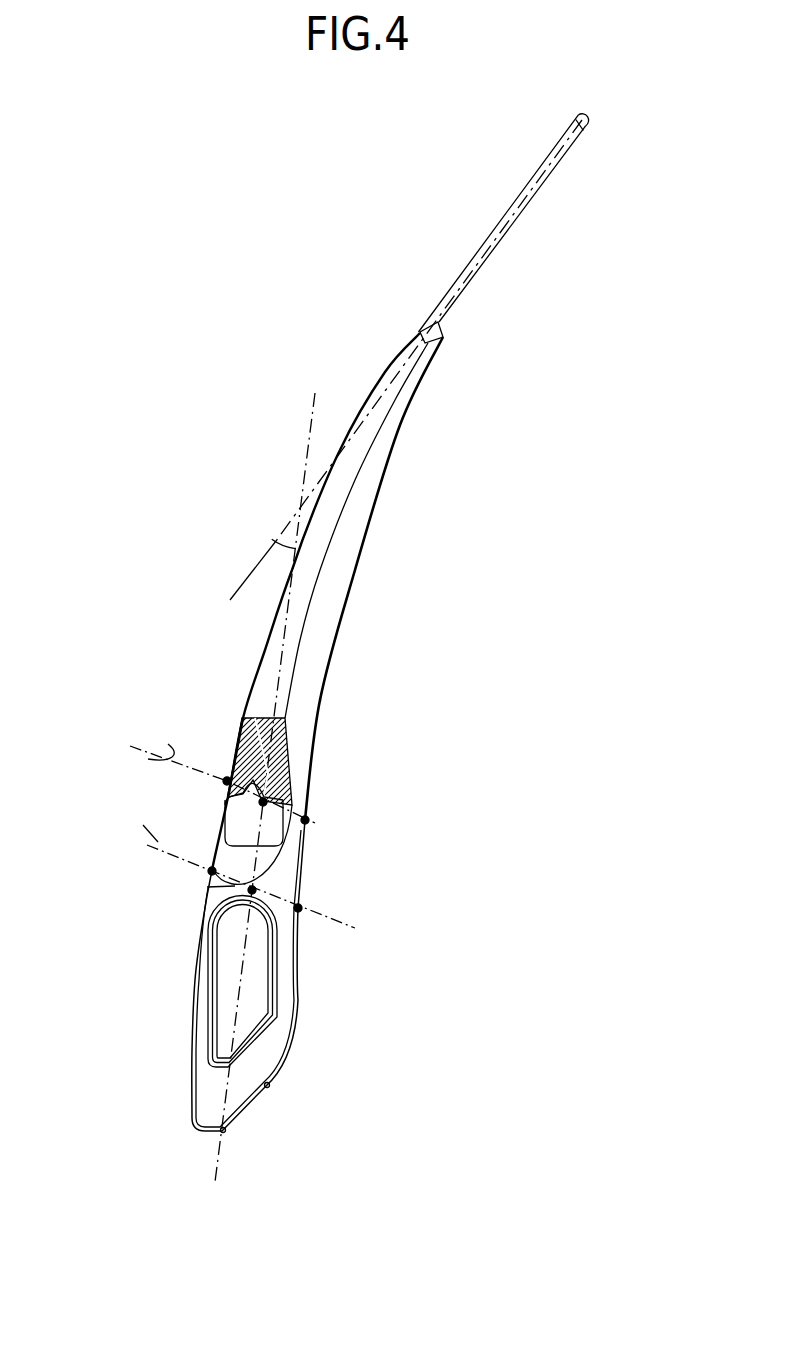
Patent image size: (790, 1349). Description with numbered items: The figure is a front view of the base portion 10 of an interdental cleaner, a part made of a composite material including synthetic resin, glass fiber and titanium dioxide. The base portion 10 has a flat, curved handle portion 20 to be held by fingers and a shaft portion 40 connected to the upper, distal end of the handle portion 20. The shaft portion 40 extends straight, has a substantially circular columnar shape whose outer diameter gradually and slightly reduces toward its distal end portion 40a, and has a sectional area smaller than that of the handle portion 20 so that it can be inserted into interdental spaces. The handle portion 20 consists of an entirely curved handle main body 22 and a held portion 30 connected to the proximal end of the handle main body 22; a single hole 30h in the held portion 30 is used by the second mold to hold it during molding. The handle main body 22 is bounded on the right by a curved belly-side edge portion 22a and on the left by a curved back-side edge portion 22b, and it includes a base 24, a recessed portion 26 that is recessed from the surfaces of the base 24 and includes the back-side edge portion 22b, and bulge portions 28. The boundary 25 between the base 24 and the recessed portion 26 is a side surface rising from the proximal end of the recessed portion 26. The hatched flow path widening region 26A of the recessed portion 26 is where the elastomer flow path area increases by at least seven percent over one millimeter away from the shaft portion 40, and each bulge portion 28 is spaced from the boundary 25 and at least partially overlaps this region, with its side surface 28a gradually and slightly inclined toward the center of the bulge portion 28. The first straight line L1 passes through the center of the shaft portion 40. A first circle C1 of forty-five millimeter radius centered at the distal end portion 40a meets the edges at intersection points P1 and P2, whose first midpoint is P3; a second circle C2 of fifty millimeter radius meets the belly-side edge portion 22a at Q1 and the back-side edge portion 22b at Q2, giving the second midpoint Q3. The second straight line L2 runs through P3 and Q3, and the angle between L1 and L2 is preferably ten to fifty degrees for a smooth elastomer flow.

The base portion 10 is at (645, 597).
The handle portion 20 is at (588, 673).
The handle main body 22 is at (530, 610).
The belly-side edge portion 22a is at (377, 510).
The back-side edge portion 22b is at (262, 652).
The base 24 is at (303, 697).
The boundary 25 is at (208, 887).
The recessed portion 26 is at (297, 615).
The flow path widening region 26A is at (250, 716).
The bulge portion 28 is at (290, 773).
The side surface 28a is at (226, 770).
The held portion 30 is at (283, 995).
The hole 30h is at (232, 990).
The shaft portion 40 is at (490, 262).
The distal end portion 40a is at (586, 116).
The first straight line L1 is at (258, 570).
The second straight line L2 is at (305, 449).
The first circle C1 is at (130, 746).
The second circle C2 is at (147, 845).
The intersection point P1 is at (307, 822).
The intersection point P2 is at (224, 782).
The first midpoint P3 is at (260, 803).
The intersection point Q1 is at (301, 907).
The intersection point Q2 is at (210, 870).
The second midpoint Q3 is at (254, 889).